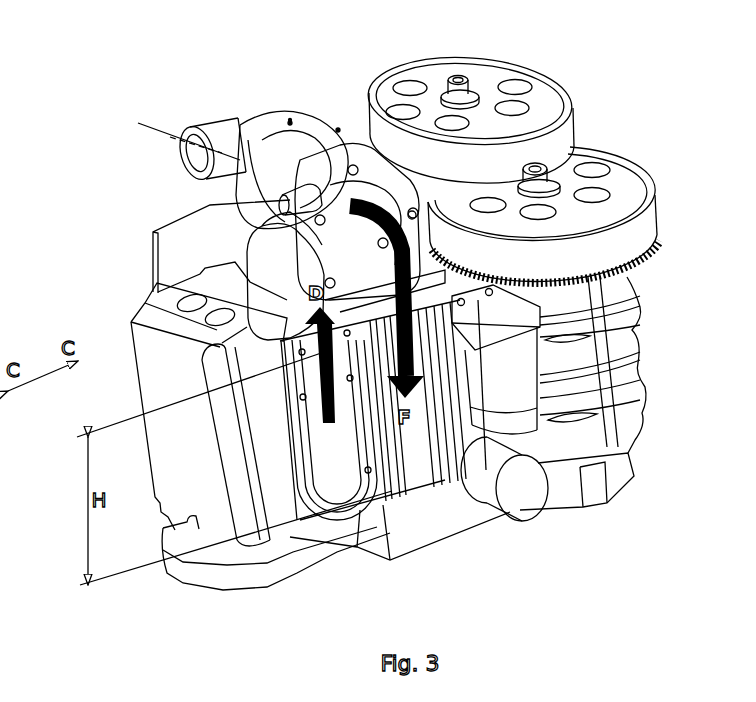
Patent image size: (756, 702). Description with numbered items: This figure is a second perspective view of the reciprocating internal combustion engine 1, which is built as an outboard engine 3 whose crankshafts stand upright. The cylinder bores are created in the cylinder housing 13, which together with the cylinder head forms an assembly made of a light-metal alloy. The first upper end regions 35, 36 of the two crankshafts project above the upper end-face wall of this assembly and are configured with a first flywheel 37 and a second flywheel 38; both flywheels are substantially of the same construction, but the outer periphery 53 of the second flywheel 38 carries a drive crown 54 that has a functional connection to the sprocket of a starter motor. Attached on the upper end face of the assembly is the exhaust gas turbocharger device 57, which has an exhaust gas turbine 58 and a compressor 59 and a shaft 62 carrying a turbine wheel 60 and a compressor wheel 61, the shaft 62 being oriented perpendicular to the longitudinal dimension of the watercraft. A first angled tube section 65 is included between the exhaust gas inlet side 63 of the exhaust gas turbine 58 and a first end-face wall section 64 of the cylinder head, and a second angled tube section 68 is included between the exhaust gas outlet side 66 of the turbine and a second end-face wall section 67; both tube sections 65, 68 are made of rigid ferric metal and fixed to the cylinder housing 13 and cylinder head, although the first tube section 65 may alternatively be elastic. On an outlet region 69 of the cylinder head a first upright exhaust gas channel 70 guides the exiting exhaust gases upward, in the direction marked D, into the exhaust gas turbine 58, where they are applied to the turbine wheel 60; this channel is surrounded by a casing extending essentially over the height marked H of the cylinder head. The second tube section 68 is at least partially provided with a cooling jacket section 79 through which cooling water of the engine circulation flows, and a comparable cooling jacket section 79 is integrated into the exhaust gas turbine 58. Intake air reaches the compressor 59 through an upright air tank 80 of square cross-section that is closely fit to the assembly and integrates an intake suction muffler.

The reciprocating internal combustion engine 1 is at (487, 546).
The outboard engine 3 is at (114, 311).
The cylinder housing 13 is at (430, 522).
The first upper end region of the first crankshaft 35 is at (443, 74).
The first upper end region of the second crankshaft 36 is at (568, 167).
The first flywheel 37 is at (580, 118).
The second flywheel 38 is at (657, 167).
The outer periphery of the second flywheel 53 is at (654, 197).
The drive crown 54 is at (663, 223).
The exhaust gas turbocharger device 57 is at (195, 124).
The exhaust gas turbine 58 is at (338, 128).
The compressor 59 is at (300, 108).
The turbine wheel 60 is at (303, 152).
The compressor wheel 61 is at (289, 120).
The shaft 62 is at (160, 140).
The exhaust gas inlet side 63 is at (262, 219).
The first end-face wall section 64 is at (285, 342).
The first angled tube section 65 is at (267, 263).
The exhaust gas outlet side 66 is at (262, 140).
The second end-face wall section 67 is at (379, 326).
The second angled tube section 68 is at (363, 182).
The outlet region of the cylinder head 69 is at (330, 445).
The first upright exhaust gas channel 70 is at (337, 477).
The cooling jacket section 79 is at (414, 212).
The air tank 80 is at (288, 118).